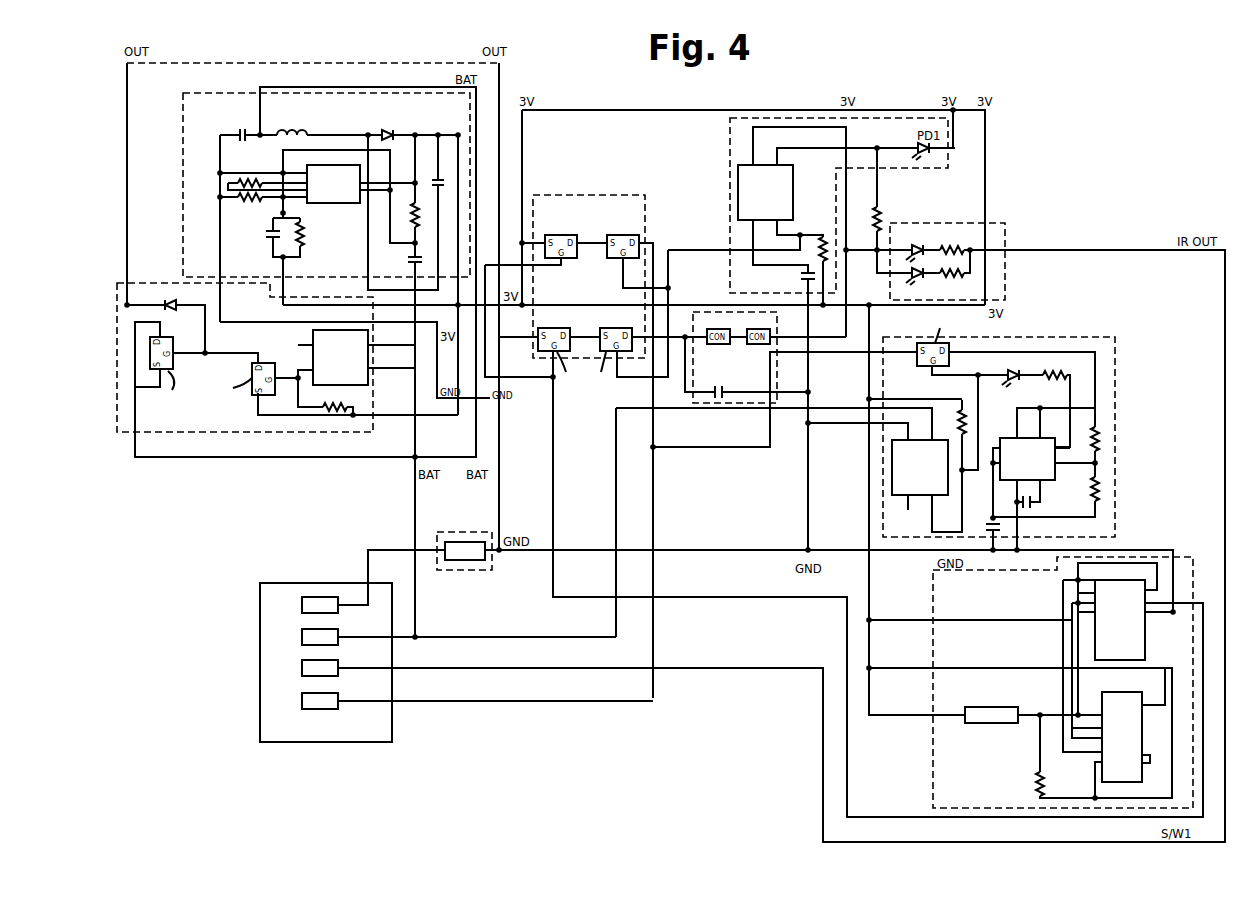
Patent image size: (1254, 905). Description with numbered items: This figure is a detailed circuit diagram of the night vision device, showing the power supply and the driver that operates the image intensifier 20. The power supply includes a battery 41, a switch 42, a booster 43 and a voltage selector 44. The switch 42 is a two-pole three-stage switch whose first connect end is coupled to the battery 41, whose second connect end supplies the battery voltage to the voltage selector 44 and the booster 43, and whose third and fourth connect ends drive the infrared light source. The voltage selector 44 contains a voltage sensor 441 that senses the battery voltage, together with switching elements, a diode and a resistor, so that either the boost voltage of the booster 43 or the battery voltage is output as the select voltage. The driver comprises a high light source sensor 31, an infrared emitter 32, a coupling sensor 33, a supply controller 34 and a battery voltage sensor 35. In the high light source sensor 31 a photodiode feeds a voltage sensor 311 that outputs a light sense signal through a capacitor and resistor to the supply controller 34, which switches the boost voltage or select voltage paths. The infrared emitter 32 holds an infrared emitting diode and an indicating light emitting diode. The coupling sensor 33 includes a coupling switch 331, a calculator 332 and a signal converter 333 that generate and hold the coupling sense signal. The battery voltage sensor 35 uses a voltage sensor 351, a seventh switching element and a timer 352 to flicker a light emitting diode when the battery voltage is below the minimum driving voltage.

The image intensifier 20 is at (722, 312).
The high light source sensor 31 is at (728, 147).
The voltage sensor 311 is at (738, 193).
The infrared emitter 32 is at (990, 222).
The coupling sensor 33 is at (1177, 557).
The coupling switch 331 is at (995, 707).
The calculator 332 is at (1095, 772).
The signal converter 333 is at (1095, 641).
The supply controller 34 is at (618, 184).
The battery voltage sensor 35 is at (1085, 337).
The voltage sensor 351 is at (892, 465).
The timer 352 is at (1057, 471).
The battery 41 is at (458, 571).
The switch 42 is at (295, 583).
The booster 43 is at (182, 138).
The voltage selector 44 is at (172, 282).
The voltage sensor 441 is at (360, 386).